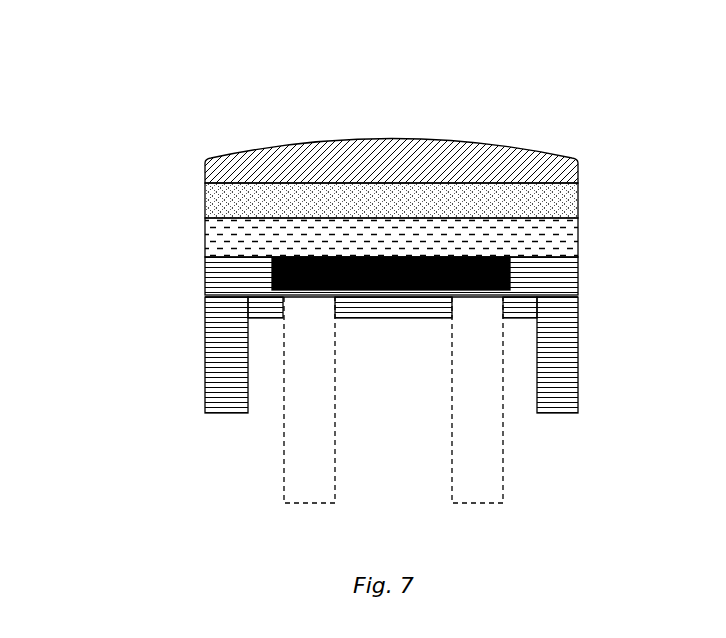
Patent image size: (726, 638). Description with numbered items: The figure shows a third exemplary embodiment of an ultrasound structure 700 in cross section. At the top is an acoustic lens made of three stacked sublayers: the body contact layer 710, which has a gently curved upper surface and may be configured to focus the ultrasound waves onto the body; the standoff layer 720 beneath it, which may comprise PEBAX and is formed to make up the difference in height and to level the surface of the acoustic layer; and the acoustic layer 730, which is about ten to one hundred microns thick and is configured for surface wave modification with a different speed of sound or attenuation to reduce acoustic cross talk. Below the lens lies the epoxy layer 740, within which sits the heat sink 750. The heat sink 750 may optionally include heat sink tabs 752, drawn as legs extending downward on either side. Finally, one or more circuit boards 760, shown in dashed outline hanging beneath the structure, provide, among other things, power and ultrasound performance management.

The ultrasound structure 700 is at (76, 93).
The body contact layer 710 is at (578, 165).
The standoff layer 720 is at (578, 200).
The acoustic layer 730 is at (578, 240).
The epoxy layer 740 is at (511, 260).
The heat sink 750 is at (578, 291).
The heat sink tabs 752 is at (205, 321).
The circuit boards 760 is at (452, 365).